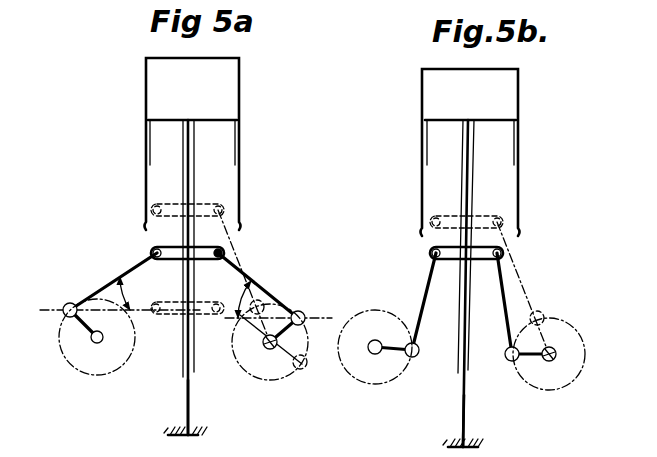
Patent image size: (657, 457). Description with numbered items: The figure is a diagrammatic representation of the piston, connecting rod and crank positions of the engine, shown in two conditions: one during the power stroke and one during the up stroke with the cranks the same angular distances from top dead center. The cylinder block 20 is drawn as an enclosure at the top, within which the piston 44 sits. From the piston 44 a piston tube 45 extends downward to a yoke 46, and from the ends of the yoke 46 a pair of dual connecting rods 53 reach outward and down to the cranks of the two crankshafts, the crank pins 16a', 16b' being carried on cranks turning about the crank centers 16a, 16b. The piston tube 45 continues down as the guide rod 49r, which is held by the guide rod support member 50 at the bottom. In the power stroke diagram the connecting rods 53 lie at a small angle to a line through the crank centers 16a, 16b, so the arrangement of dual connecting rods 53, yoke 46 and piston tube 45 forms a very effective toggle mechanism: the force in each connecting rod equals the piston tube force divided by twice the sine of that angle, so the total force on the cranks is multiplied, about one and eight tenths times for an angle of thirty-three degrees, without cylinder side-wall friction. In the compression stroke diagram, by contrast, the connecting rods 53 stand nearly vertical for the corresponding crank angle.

In FIG. 5A, the cylinder block 20 is at (241, 104).
In FIG. 5B, the cylinder block 20 is at (520, 102).
In FIG. 5A, the piston 44 is at (172, 119).
In FIG. 5B, the piston 44 is at (450, 119).
In FIG. 5A, the piston tube 45 is at (195, 190).
In FIG. 5B, the piston tube 45 is at (473, 202).
In FIG. 5A, the yoke 46 is at (200, 248).
In FIG. 5B, the yoke 46 is at (485, 247).
In FIG. 5A, the connecting rods 53 is at (117, 279).
In FIG. 5B, the connecting rods 53 is at (424, 295).
In FIG. 5A, the left crank pivot 16a is at (97, 351).
In FIG. 5B, the left crank pivot 16a is at (375, 364).
In FIG. 5A, the left crank pin 16a' is at (63, 300).
In FIG. 5B, the left crank pin 16a' is at (409, 374).
In FIG. 5A, the right crank pivot 16b is at (270, 357).
In FIG. 5B, the right crank pivot 16b is at (557, 370).
In FIG. 5A, the right crank pin 16b' is at (312, 307).
In FIG. 5B, the right crank pin 16b' is at (509, 372).
In FIG. 5A, the guide rod 49r is at (189, 407).
In FIG. 5B, the guide rod 49r is at (464, 408).
In FIG. 5A, the guide rod support member 50 is at (200, 433).
In FIG. 5B, the guide rod support member 50 is at (480, 446).